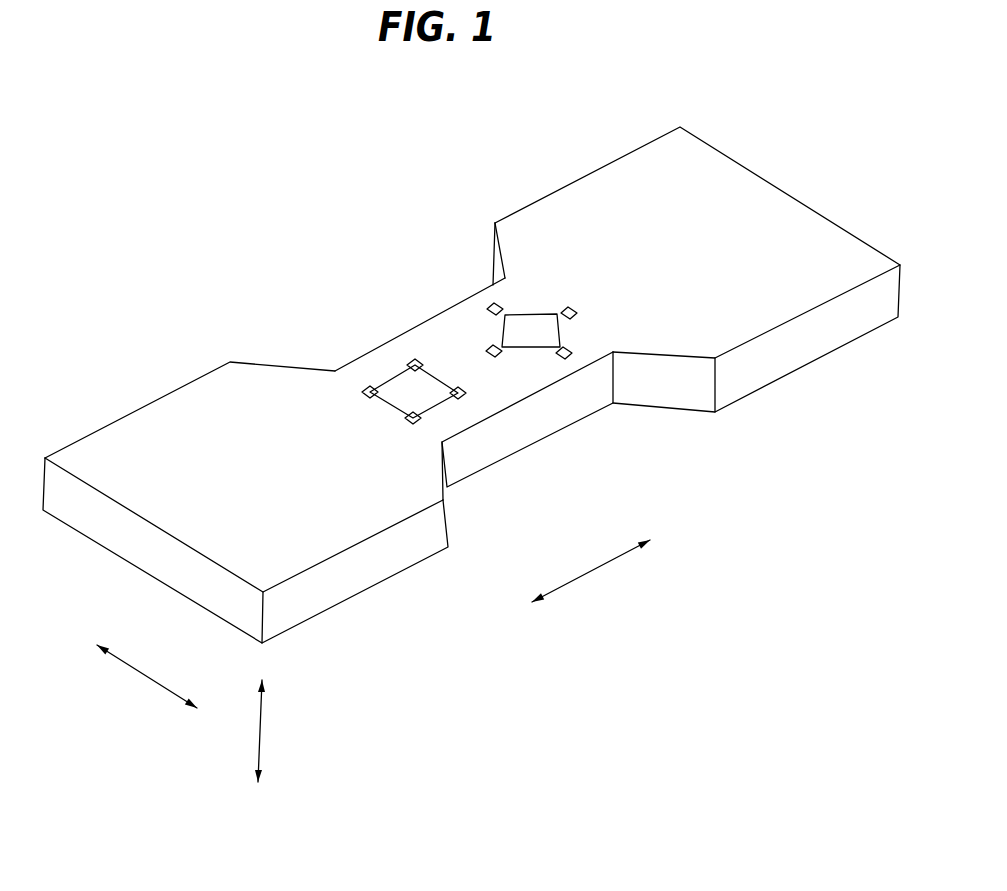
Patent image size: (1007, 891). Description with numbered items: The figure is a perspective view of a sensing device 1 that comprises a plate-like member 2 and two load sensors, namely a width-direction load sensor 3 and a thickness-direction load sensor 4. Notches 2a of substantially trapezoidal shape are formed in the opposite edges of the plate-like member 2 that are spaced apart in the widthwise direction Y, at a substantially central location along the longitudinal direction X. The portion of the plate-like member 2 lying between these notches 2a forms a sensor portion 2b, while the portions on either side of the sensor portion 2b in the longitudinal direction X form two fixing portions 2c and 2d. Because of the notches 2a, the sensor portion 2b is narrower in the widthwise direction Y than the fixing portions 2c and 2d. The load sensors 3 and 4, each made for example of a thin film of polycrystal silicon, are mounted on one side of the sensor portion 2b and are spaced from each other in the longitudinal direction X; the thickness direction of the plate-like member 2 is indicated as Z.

The sensing device 1 is at (440, 252).
The plate-like member 2 is at (740, 153).
The notches 2a is at (425, 322).
The sensor portion 2b is at (522, 383).
The fixing portion 2c is at (170, 415).
The fixing portion 2d is at (778, 208).
The width-direction load sensor 3 is at (541, 306).
The thickness-direction load sensor 4 is at (383, 375).